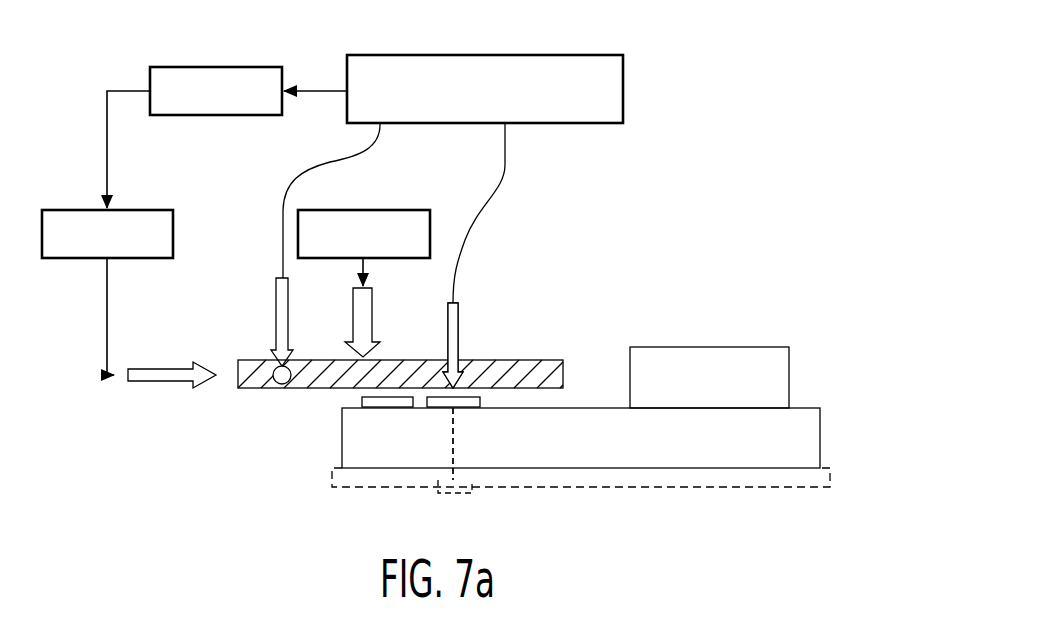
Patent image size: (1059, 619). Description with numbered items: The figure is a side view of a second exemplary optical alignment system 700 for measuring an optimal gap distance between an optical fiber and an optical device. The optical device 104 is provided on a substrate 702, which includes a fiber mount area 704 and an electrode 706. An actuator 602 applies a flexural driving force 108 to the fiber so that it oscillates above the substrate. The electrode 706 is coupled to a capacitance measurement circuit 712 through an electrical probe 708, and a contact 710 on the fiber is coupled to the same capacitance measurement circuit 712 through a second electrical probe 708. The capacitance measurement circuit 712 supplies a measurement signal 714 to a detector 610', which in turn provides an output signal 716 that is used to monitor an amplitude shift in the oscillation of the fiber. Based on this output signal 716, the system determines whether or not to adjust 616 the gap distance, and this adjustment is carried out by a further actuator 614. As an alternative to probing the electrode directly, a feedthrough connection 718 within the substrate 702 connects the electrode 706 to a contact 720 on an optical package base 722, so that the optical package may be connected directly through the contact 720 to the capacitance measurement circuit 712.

The optical alignment system 700 is at (812, 46).
The substrate 702 is at (808, 408).
The fiber mount area 704 is at (362, 397).
The electrode 706 is at (483, 398).
The electrical probe 708 is at (276, 305).
The contact 710 is at (278, 386).
The capacitance measurement circuit 712 is at (623, 82).
The measurement signal 714 is at (313, 90).
The output signal 716 is at (115, 89).
The feedthrough connection 718 is at (453, 445).
The contact 720 is at (457, 493).
The optical package base 722 is at (785, 487).
The optical device 104 is at (719, 347).
The flexural driving force 108 is at (372, 319).
The actuator 602 is at (400, 210).
The detector 610' is at (216, 63).
The actuator 614 is at (70, 210).
The adjust 616 is at (162, 368).